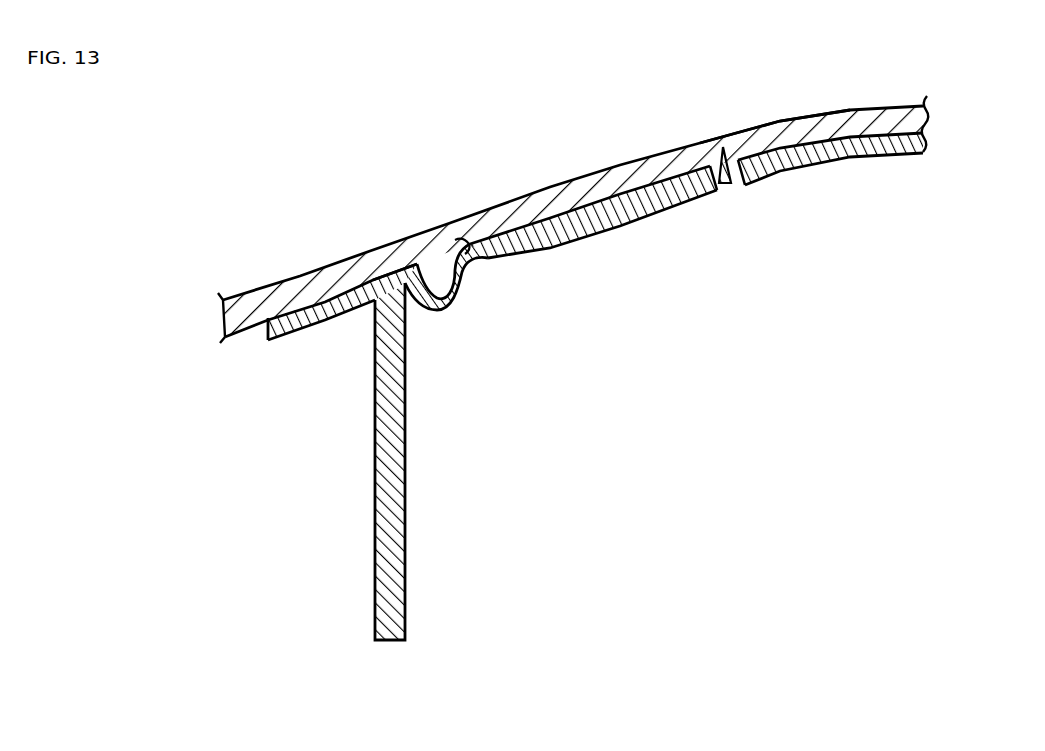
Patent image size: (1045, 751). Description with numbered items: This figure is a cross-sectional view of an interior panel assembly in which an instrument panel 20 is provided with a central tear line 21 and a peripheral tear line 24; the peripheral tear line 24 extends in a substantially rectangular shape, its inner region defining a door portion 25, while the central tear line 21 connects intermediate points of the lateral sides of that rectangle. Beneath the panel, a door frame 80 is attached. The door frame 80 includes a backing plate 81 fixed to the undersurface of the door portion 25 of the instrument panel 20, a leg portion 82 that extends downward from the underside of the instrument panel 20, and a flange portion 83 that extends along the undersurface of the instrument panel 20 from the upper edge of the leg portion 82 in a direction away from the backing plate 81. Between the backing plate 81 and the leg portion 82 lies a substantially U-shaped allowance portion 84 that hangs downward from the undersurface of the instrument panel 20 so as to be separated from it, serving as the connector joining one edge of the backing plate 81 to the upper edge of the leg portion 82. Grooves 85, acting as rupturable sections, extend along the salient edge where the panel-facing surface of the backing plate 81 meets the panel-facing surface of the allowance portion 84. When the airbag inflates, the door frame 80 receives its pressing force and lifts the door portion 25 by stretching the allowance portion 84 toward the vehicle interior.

The instrument panel 20 is at (236, 280).
The central tear line 21 is at (727, 180).
The peripheral tear line 24 is at (380, 262).
The door portion 25 is at (784, 88).
The door frame 80 is at (556, 423).
The backing plate 81 is at (613, 224).
The leg portion 82 is at (407, 402).
The flange portion 83 is at (266, 329).
The allowance portion 84 is at (458, 302).
The groove 85 is at (450, 248).